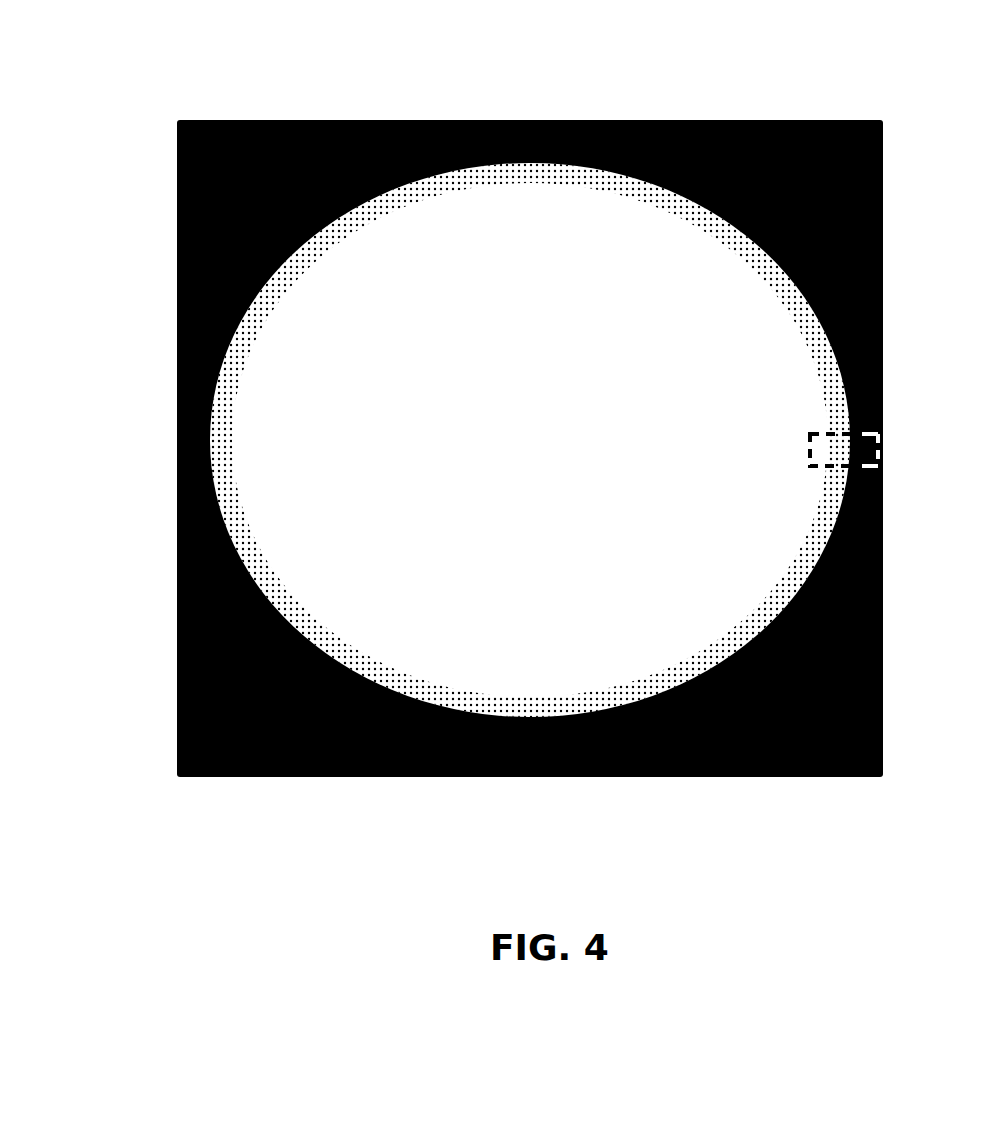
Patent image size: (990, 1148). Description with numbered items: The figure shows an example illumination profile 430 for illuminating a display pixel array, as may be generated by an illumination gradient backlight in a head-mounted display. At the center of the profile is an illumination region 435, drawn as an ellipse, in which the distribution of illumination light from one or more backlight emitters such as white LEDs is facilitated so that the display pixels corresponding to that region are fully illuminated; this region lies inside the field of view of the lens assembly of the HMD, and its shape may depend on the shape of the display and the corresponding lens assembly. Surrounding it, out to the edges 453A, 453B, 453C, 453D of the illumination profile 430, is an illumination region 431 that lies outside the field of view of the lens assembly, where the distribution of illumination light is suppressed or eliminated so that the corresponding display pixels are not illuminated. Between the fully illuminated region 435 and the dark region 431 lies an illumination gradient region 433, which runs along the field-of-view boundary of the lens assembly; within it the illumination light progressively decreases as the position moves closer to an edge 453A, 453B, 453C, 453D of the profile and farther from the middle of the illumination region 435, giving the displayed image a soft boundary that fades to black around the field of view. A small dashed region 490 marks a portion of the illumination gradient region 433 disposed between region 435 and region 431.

The illumination profile 430 is at (883, 120).
The illumination region outside the FOV 431 is at (249, 203).
The illumination gradient region 433 is at (654, 194).
The illumination region 435 is at (543, 434).
The region 490 is at (808, 448).
The edge of the illumination profile 453A is at (371, 119).
The edge of the illumination profile 453B is at (884, 449).
The edge of the illumination profile 453C is at (752, 778).
The edge of the illumination profile 453D is at (176, 572).